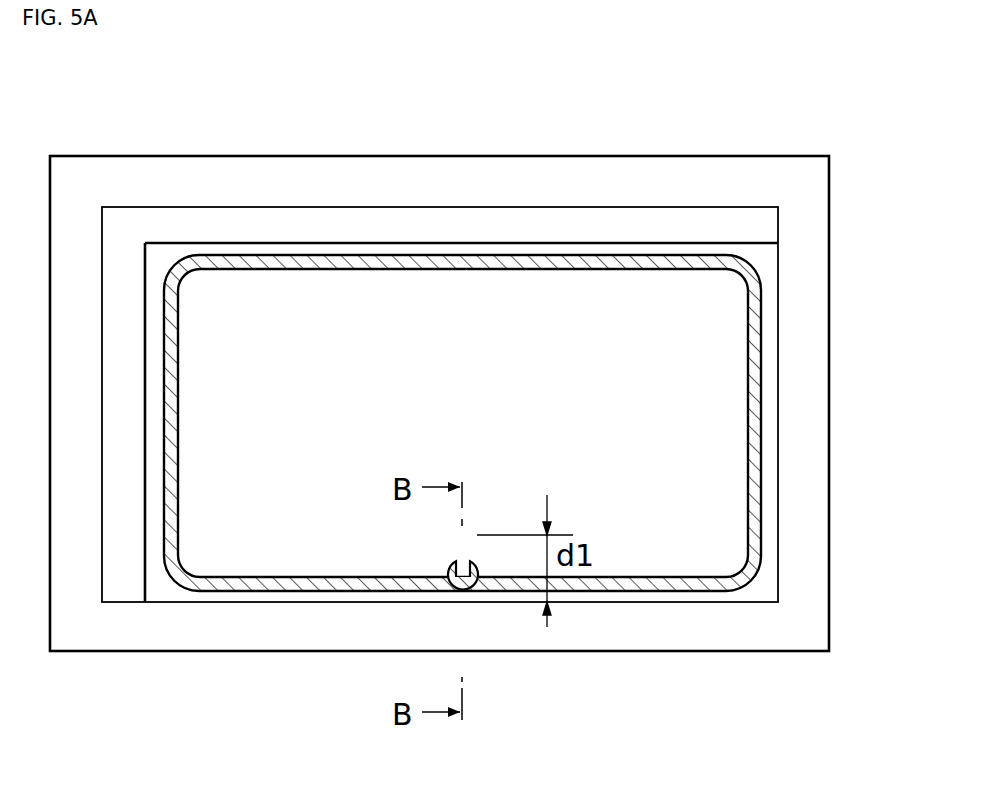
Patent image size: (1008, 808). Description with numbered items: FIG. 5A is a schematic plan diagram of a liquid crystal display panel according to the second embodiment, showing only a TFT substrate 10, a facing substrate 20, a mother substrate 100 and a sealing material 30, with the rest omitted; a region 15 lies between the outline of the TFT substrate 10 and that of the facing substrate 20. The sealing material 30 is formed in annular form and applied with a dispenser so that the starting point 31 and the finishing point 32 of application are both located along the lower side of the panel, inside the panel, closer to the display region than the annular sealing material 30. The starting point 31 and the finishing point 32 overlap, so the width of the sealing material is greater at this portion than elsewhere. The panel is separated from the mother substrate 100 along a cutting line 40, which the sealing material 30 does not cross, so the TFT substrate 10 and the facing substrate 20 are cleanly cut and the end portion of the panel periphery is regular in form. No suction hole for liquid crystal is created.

The mother substrate 100 is at (211, 156).
The TFT substrate 10 is at (462, 207).
The frame portion 15 is at (568, 218).
The facing substrate 20 is at (663, 243).
The sealing material 30 is at (760, 445).
The cutting line 40 is at (780, 525).
The starting point 31 is at (568, 640).
The finishing point 32 is at (472, 554).